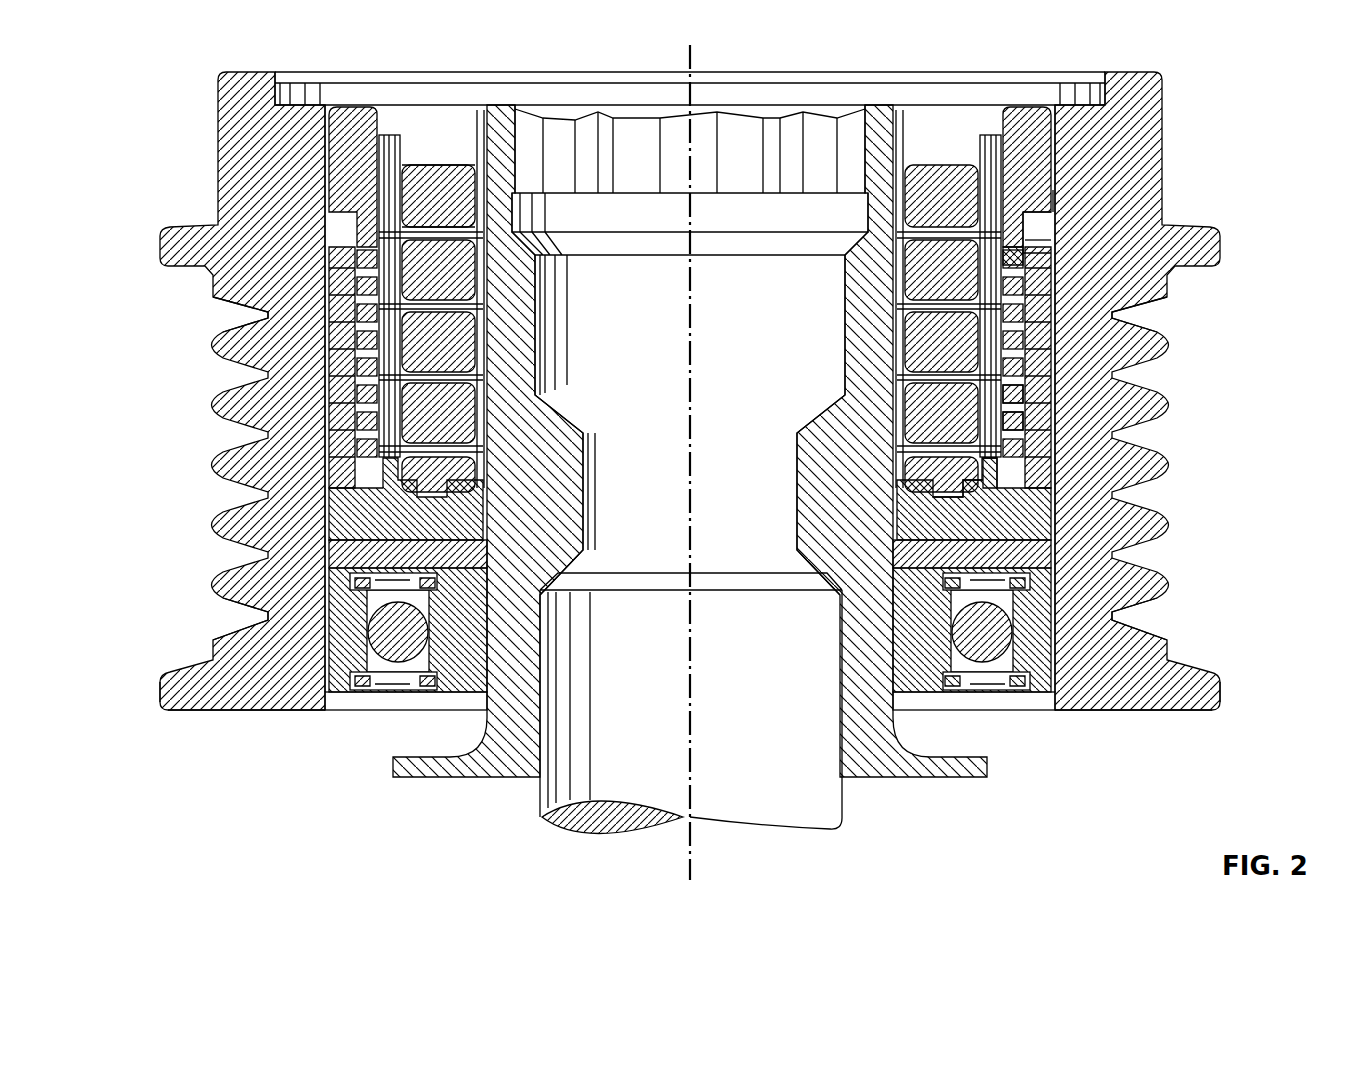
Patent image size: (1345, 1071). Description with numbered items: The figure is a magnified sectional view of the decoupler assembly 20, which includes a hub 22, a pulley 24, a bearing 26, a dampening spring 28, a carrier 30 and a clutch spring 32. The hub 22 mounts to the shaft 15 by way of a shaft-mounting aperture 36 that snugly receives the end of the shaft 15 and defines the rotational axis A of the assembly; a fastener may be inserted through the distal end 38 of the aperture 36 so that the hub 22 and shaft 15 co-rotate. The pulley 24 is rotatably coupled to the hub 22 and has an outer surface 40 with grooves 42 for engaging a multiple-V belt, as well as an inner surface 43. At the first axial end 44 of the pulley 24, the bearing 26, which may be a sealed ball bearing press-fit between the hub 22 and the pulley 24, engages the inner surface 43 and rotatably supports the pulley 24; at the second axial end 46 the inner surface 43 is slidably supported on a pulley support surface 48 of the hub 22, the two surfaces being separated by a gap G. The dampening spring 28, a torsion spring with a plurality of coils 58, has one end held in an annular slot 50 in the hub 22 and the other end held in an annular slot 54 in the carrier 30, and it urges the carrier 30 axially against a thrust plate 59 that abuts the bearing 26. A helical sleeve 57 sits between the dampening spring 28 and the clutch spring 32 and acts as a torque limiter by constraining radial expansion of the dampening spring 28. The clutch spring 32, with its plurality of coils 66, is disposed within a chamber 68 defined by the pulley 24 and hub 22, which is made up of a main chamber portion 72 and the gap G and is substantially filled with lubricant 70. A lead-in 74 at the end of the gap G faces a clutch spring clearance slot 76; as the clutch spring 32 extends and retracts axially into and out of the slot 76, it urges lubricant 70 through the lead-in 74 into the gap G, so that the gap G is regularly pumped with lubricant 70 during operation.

The decoupler assembly 20 is at (1187, 31).
The shaft 15 is at (805, 782).
The hub 22 is at (877, 125).
The pulley 24 is at (1165, 118).
The bearing 26 is at (1053, 785).
The dampening spring 28 is at (1012, 343).
The carrier 30 is at (1035, 522).
The clutch spring 32 is at (1047, 432).
The shaft-mounting aperture 36 is at (690, 425).
The distal end of the aperture 38 is at (750, 132).
The outer surface 40 is at (1013, 398).
The grooves 42 is at (1152, 620).
The inner surface 43 is at (1050, 115).
The first axial end 44 is at (1082, 680).
The second axial end 46 is at (1145, 88).
The pulley support surface 48 is at (1057, 158).
The annular slot 50 is at (985, 165).
The annular slot 54 is at (1000, 447).
The sleeve 57 is at (1013, 372).
The coils 58 is at (400, 443).
The thrust plate 59 is at (342, 553).
The coils 66 is at (327, 308).
The chamber 68 is at (1018, 258).
The lubricant 70 is at (1040, 233).
The main chamber portion 72 is at (1017, 402).
The lead-in 74 is at (1050, 213).
The clutch spring clearance slot 76 is at (1040, 243).
The rotational axis A is at (688, 846).
The gap G is at (1057, 190).